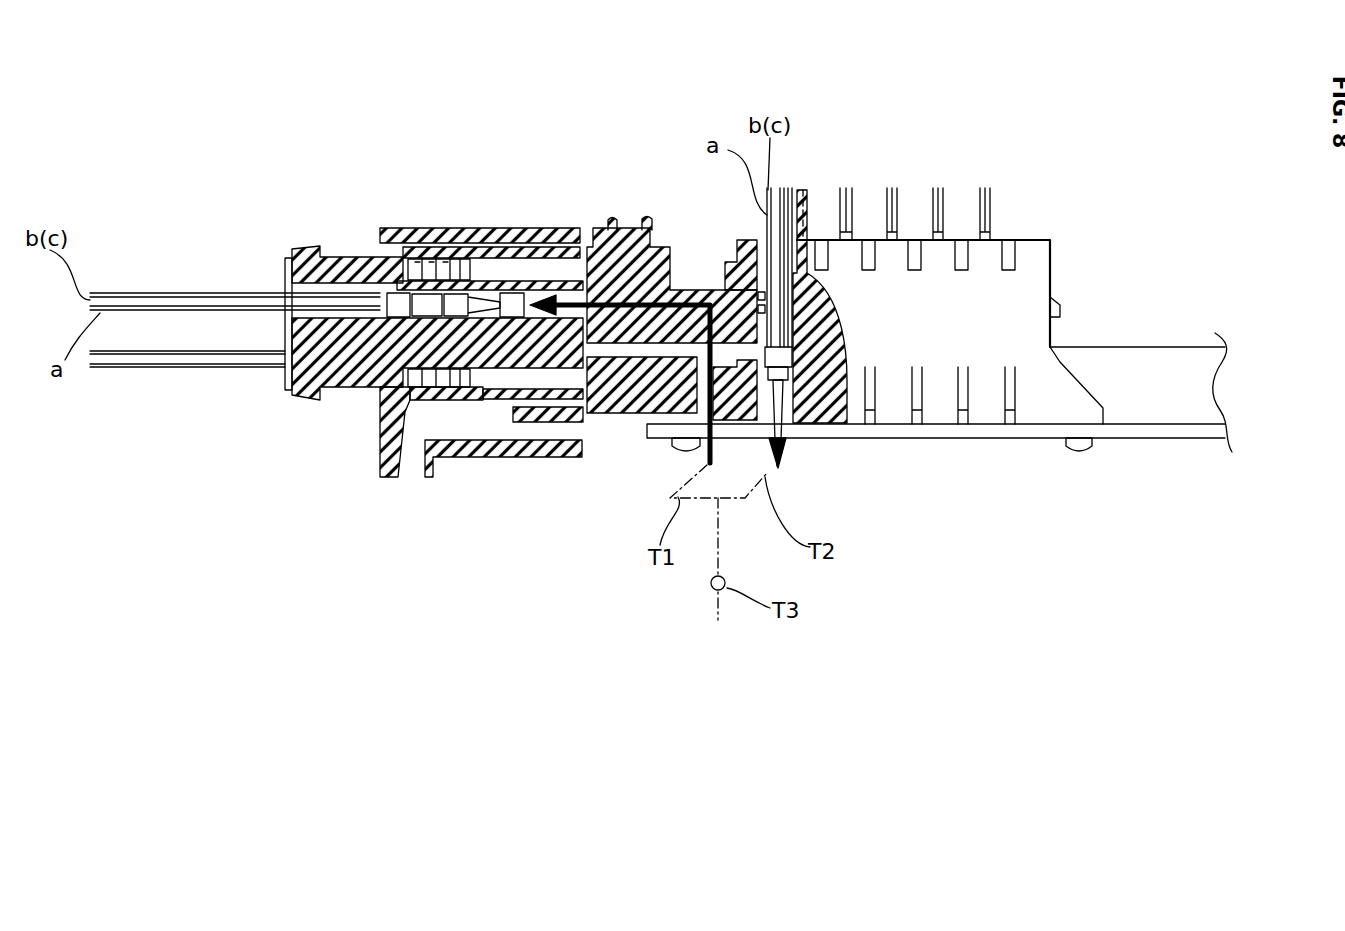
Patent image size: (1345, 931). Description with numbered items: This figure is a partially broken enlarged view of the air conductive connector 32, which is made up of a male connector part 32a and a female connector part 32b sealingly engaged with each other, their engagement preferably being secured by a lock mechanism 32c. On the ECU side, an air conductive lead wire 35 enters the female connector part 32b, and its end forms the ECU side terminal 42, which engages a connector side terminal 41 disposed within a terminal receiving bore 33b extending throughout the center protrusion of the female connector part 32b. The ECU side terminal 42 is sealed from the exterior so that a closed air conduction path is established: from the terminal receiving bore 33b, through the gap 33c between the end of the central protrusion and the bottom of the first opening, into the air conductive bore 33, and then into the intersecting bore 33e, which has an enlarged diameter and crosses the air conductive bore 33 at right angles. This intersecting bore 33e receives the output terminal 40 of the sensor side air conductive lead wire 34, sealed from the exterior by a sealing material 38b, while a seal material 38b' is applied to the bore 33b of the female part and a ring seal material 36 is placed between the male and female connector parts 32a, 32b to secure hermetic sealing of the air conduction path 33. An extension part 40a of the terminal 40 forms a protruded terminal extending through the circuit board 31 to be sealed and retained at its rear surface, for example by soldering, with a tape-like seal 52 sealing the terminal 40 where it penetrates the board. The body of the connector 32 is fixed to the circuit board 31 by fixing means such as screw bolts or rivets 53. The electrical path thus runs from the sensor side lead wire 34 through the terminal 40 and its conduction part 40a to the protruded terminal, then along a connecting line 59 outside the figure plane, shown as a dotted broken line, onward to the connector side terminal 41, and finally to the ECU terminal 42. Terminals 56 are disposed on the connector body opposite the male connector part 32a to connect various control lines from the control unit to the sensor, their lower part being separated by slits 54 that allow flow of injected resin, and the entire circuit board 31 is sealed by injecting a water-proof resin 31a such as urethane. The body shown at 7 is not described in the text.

The air conductive lead wire 35 is at (145, 297).
The terminal receiving bore 33b is at (290, 295).
The seal material 38b' is at (386, 266).
The female connector part 32b is at (418, 228).
The male connector part 32a is at (560, 228).
The ECU side terminal 42 is at (513, 295).
The connector body 7 is at (340, 395).
The ring seal material 36 is at (398, 480).
The lock mechanism 32c is at (485, 457).
The gap 33c is at (553, 422).
The air conductive bore 33 is at (657, 348).
The connector side terminal 41 is at (610, 228).
The air conductive connector 32 is at (648, 228).
The sealing material 38b is at (727, 242).
The output terminal 40 is at (818, 425).
The air conductive lead wire 34 is at (788, 198).
The extension part 40a is at (752, 495).
The tape-like seal 52 is at (778, 463).
The connecting line 59 is at (740, 500).
The circuit board 31 is at (1170, 433).
The screw bolts or rivets 53 is at (682, 448).
The intersecting bore 33e is at (797, 356).
The terminals 56 is at (985, 233).
The slits 54 is at (1010, 397).
The water-proof resin 31a is at (1157, 380).